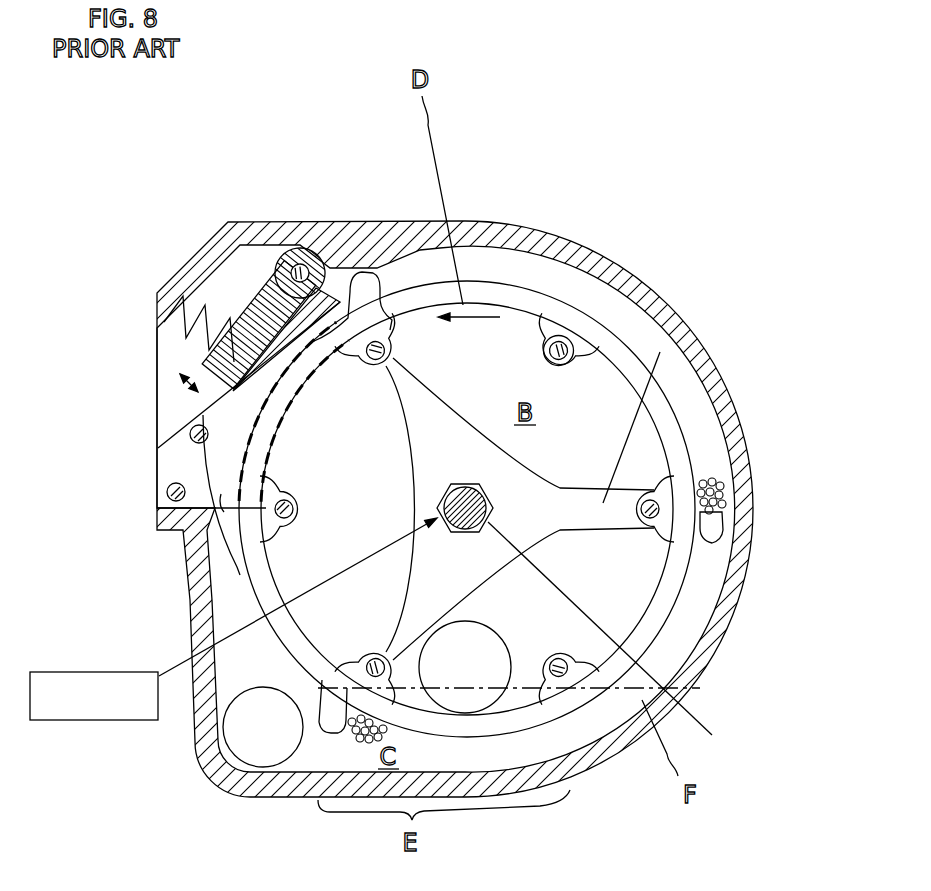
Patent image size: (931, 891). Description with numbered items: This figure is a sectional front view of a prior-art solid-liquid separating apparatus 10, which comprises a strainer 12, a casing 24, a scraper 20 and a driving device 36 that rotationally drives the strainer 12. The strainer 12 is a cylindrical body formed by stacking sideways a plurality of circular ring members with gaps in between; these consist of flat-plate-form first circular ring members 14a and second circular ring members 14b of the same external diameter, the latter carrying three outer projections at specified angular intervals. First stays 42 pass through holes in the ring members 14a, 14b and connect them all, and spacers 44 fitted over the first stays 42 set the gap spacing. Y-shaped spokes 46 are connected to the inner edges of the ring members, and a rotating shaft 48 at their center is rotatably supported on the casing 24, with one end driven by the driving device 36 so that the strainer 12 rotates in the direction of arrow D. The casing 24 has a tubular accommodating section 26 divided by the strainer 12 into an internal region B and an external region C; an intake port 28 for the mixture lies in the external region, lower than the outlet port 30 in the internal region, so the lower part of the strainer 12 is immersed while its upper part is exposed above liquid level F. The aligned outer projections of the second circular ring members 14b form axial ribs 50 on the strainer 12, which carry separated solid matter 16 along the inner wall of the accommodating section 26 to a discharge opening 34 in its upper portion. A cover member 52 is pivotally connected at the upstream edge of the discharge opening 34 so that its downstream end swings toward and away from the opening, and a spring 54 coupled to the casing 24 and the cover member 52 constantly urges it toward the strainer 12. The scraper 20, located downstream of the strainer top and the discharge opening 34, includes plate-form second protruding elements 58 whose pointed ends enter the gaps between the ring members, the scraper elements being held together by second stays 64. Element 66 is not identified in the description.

The solid-liquid separating apparatus 10 is at (751, 231).
The strainer 12 is at (621, 337).
The first circular ring members 14a is at (687, 470).
The second circular ring members 14b is at (518, 272).
The solid matter 16 is at (358, 742).
The scraper 20 is at (184, 462).
The casing 24 is at (467, 221).
The accommodating section 26 is at (521, 300).
The intake port 28 is at (252, 752).
The outlet port 30 is at (475, 640).
The discharge opening 34 is at (287, 340).
The driving device 36 is at (133, 721).
The first stays 42 is at (545, 350).
The spacers 44 is at (574, 338).
The spokes 46 is at (678, 348).
The rotating shaft 48 is at (712, 735).
The ribs 50 is at (370, 275).
The cover member 52 is at (248, 302).
The spring 54 is at (205, 300).
The second protruding elements 58 is at (322, 335).
The second stays 64 is at (196, 432).
The guide edge 66 is at (205, 548).